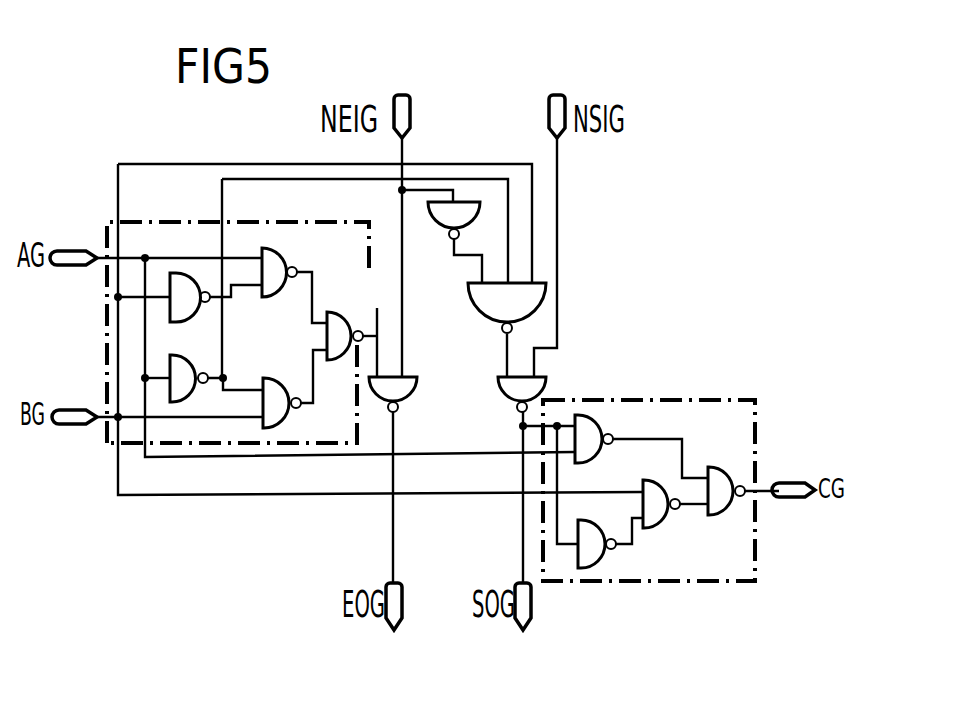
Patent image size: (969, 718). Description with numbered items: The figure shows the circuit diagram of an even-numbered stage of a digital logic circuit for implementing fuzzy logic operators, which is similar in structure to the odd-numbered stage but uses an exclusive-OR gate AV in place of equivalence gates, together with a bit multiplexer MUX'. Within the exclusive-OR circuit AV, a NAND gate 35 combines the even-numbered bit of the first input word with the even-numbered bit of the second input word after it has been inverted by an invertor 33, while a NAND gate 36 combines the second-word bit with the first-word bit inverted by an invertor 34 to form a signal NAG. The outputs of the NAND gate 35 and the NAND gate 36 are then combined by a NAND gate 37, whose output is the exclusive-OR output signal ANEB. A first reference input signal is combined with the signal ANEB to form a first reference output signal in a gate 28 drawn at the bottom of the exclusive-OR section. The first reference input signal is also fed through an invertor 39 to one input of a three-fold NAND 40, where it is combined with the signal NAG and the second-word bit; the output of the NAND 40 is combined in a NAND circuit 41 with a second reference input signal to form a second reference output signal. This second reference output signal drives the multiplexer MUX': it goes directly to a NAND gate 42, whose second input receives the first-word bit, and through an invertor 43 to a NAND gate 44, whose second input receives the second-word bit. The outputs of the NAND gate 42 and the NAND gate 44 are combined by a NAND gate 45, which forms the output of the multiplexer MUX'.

The NAND gate producing EOG output 28 is at (402, 407).
The invertor 33 is at (188, 319).
The invertor 34 is at (175, 358).
The NAND gate 35 is at (290, 247).
The NAND gate 36 is at (271, 380).
The NAND gate 37 is at (336, 360).
The invertor 39 is at (463, 228).
The three-fold NAND 40 is at (478, 302).
The NAND circuit 41 is at (541, 387).
The NAND gate 42 is at (603, 422).
The invertor 43 is at (590, 521).
The NAND gate 44 is at (661, 524).
The NAND gate 45 is at (719, 516).
The exclusive-OR gate AV is at (160, 221).
The signal NAG is at (226, 344).
The exclusive-OR output signal ANEB is at (377, 310).
The bit multiplexer MUX' is at (797, 549).